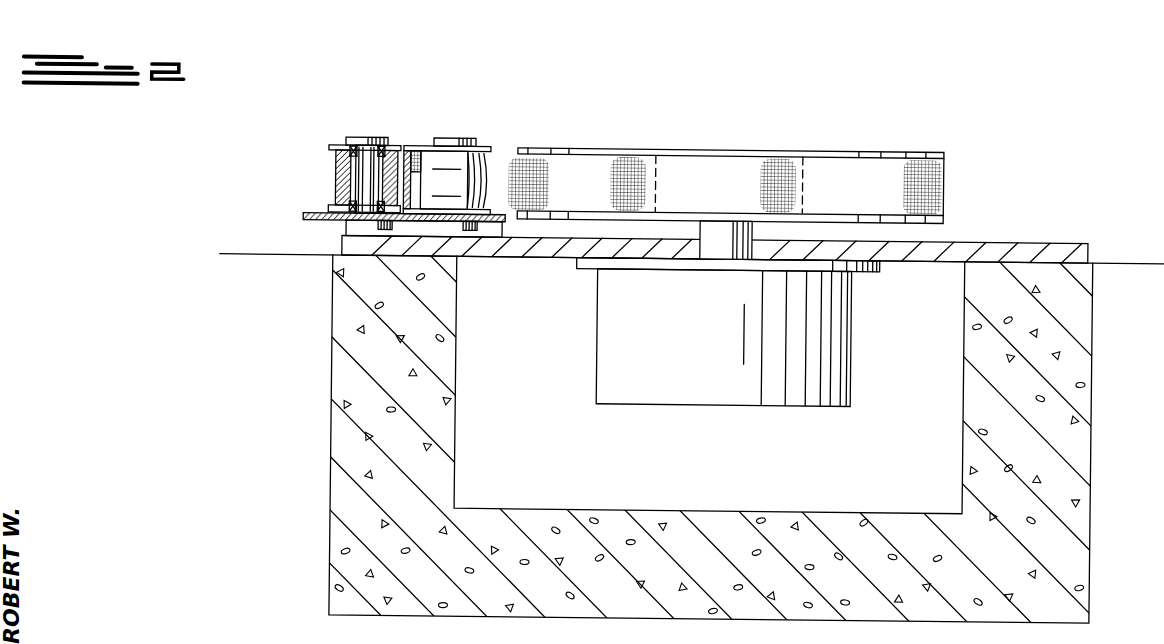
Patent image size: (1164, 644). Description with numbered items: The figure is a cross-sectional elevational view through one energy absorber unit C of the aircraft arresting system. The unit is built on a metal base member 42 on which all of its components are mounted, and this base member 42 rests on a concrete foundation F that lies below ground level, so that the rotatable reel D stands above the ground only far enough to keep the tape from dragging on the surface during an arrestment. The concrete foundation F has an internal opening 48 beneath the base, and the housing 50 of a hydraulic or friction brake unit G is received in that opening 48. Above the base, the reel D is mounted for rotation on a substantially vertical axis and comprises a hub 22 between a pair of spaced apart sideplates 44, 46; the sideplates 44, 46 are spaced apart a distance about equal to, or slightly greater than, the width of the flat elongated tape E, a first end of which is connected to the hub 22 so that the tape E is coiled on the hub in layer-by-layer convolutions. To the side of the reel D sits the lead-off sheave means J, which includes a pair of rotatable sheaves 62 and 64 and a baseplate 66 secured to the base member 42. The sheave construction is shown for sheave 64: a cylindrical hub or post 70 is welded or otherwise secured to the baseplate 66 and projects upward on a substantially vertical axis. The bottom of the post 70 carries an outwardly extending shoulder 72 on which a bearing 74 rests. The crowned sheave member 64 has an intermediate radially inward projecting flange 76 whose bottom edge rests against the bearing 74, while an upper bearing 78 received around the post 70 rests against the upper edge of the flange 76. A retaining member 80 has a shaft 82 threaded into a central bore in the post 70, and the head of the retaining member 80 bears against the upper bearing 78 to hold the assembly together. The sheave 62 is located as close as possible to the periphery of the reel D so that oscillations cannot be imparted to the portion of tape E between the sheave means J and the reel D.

The hub 22 is at (655, 157).
The metal base member 42 is at (1090, 236).
The sideplate 44 is at (945, 147).
The sideplate 46 is at (945, 212).
The internal opening 48 is at (709, 384).
The housing 50 is at (855, 355).
The rotatable sheave 62 is at (460, 106).
The crowned sheave member 64 is at (328, 145).
The baseplate 66 is at (303, 217).
The cylindrical hub or post 70 is at (358, 183).
The outwardly extending shoulder 72 is at (345, 222).
The bearing 74 is at (350, 206).
The intermediate radially inward projecting flange 76 is at (335, 166).
The upper bearing 78 is at (388, 146).
The retaining member 80 is at (348, 137).
The shaft 82 is at (362, 142).
The energy absorber unit C is at (740, 222).
The rotatable reel D is at (749, 160).
The flat elongated tape E is at (582, 181).
The concrete foundation F is at (1097, 364).
The hydraulic or friction brake unit G is at (741, 314).
The lead-off sheave means J is at (384, 153).